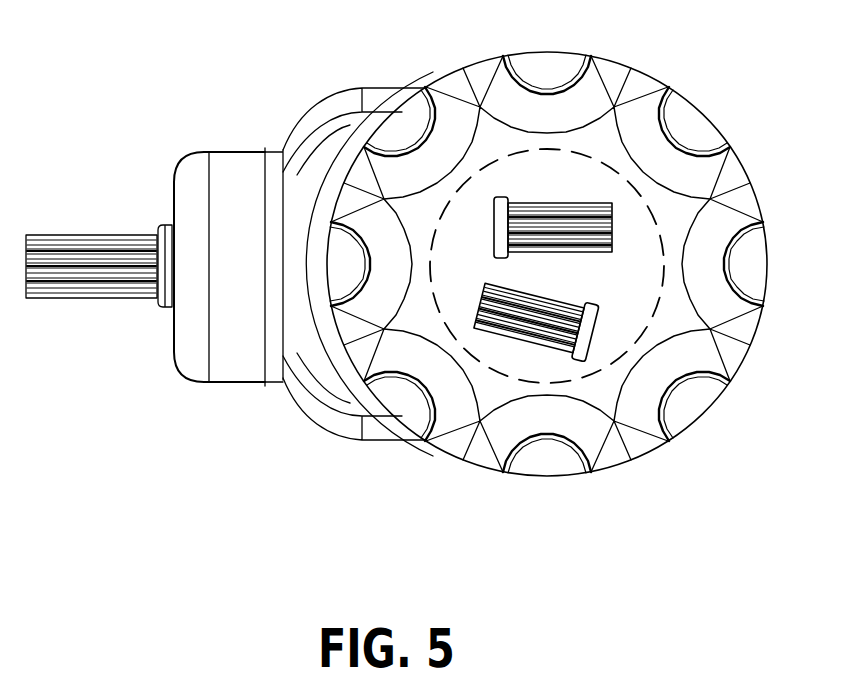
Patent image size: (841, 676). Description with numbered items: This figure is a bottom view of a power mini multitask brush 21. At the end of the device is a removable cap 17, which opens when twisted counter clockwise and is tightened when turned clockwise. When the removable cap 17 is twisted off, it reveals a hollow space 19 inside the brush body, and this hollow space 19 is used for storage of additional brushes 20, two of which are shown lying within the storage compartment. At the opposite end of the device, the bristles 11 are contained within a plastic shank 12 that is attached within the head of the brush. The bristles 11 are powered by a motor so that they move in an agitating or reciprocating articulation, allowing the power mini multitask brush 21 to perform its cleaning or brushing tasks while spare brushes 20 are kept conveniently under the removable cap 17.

The bristles 11 is at (44, 252).
The plastic shank 12 is at (170, 302).
The removable cap 17 is at (458, 461).
The hollow space 19 is at (486, 194).
The additional brushes 20 is at (586, 212).
The power mini multitask brush 21 is at (722, 534).